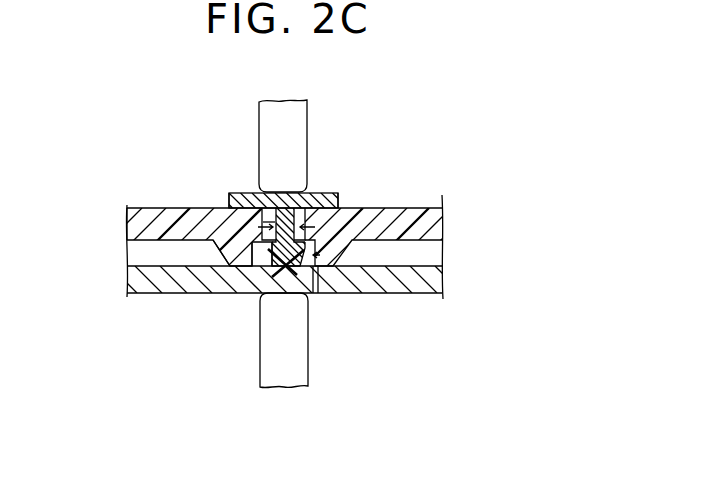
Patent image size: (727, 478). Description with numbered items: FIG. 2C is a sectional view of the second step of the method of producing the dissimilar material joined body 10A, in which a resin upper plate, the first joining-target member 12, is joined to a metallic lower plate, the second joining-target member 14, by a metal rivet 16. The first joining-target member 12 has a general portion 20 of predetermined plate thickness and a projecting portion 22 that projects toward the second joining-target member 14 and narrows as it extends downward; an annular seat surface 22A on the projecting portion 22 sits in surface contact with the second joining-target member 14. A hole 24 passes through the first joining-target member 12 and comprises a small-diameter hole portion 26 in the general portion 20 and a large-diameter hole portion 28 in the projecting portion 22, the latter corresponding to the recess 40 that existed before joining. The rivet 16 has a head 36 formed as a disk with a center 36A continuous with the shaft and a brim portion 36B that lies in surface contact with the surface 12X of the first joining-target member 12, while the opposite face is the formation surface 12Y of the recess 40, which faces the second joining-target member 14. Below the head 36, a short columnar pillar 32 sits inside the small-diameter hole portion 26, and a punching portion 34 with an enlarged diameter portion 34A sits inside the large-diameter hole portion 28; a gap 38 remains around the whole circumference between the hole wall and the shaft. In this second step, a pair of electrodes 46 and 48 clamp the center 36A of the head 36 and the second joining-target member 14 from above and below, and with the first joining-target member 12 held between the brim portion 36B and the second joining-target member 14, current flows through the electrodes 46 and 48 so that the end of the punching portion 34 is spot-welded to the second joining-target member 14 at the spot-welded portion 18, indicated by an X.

The dissimilar material joined body 10A is at (254, 247).
The first joining-target member 12 is at (151, 199).
The surface 12X is at (165, 206).
The formation surface 12Y is at (320, 272).
The second joining-target member 14 is at (387, 302).
The rivet 16 is at (295, 242).
The spot-welded portion 18 is at (272, 268).
The general portion 20 is at (134, 207).
The projecting portion 22 is at (195, 259).
The seat surface 22A is at (225, 252).
The hole 24 is at (318, 268).
The small-diameter hole portion 26 is at (225, 252).
The large-diameter hole portion 28 is at (236, 307).
The pillar 32 is at (276, 216).
The punching portion 34 is at (315, 227).
The enlarged diameter portion 34A is at (245, 263).
The head 36 is at (315, 160).
The center 36A is at (286, 191).
The brim portion 36B is at (335, 191).
The gap 38 is at (262, 224).
The recess 40 is at (320, 246).
The electrode 46 is at (307, 118).
The electrode 48 is at (308, 372).